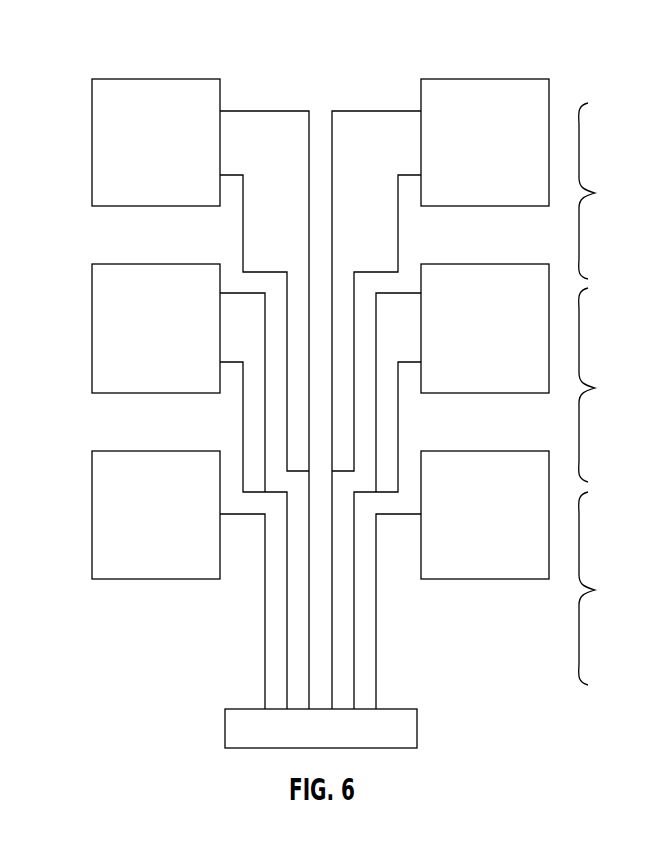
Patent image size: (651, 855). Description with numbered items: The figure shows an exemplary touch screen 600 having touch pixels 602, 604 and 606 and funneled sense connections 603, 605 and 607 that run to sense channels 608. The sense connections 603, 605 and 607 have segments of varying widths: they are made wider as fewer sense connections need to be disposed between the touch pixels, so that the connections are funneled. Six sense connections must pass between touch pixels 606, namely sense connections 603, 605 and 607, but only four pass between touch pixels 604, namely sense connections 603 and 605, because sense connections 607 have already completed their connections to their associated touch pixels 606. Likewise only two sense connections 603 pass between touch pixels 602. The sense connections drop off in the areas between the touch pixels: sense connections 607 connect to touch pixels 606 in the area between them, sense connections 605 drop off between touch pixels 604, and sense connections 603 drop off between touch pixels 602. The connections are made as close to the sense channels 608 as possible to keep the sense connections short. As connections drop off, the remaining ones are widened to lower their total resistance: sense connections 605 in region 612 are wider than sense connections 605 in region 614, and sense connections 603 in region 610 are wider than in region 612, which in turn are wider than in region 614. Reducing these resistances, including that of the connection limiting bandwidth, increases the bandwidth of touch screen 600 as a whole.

The touch screen 600 is at (71, 36).
The touch pixels 602 is at (130, 78).
The sense connections 603 is at (272, 110).
The touch pixels 604 is at (132, 264).
The sense connections 605 is at (243, 292).
The touch pixels 606 is at (132, 450).
The sense connections 607 is at (265, 648).
The sense channels 608 is at (417, 728).
The region 610 is at (610, 191).
The region 612 is at (607, 385).
The region 614 is at (607, 588).